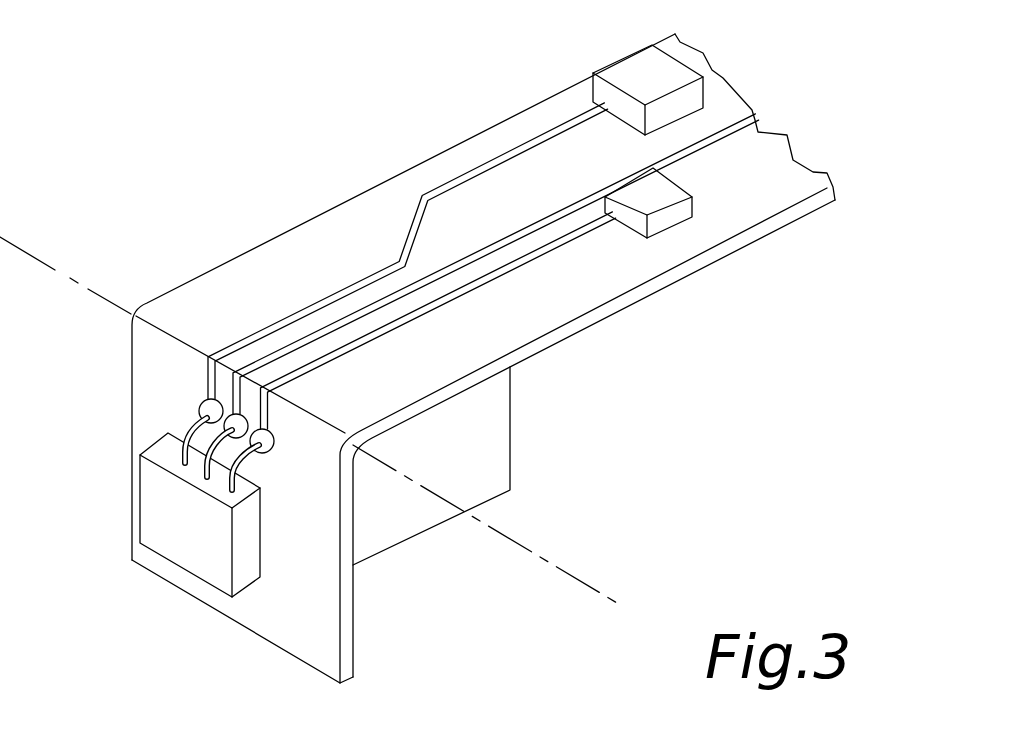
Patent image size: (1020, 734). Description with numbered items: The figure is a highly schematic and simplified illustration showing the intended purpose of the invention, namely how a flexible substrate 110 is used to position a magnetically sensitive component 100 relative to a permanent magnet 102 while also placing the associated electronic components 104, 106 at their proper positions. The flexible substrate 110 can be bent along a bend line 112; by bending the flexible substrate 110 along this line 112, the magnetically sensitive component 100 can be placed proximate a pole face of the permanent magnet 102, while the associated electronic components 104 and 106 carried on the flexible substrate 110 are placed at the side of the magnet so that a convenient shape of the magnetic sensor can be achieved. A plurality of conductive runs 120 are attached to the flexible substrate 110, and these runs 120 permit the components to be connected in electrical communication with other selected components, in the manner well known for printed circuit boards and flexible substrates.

The magnetically sensitive component 100 is at (185, 547).
The permanent magnet 102 is at (487, 485).
The electronic component 104 is at (627, 63).
The electronic component 106 is at (657, 203).
The flexible substrate 110 is at (213, 293).
The bend line 112 is at (588, 580).
The conductive runs 120 is at (457, 181).